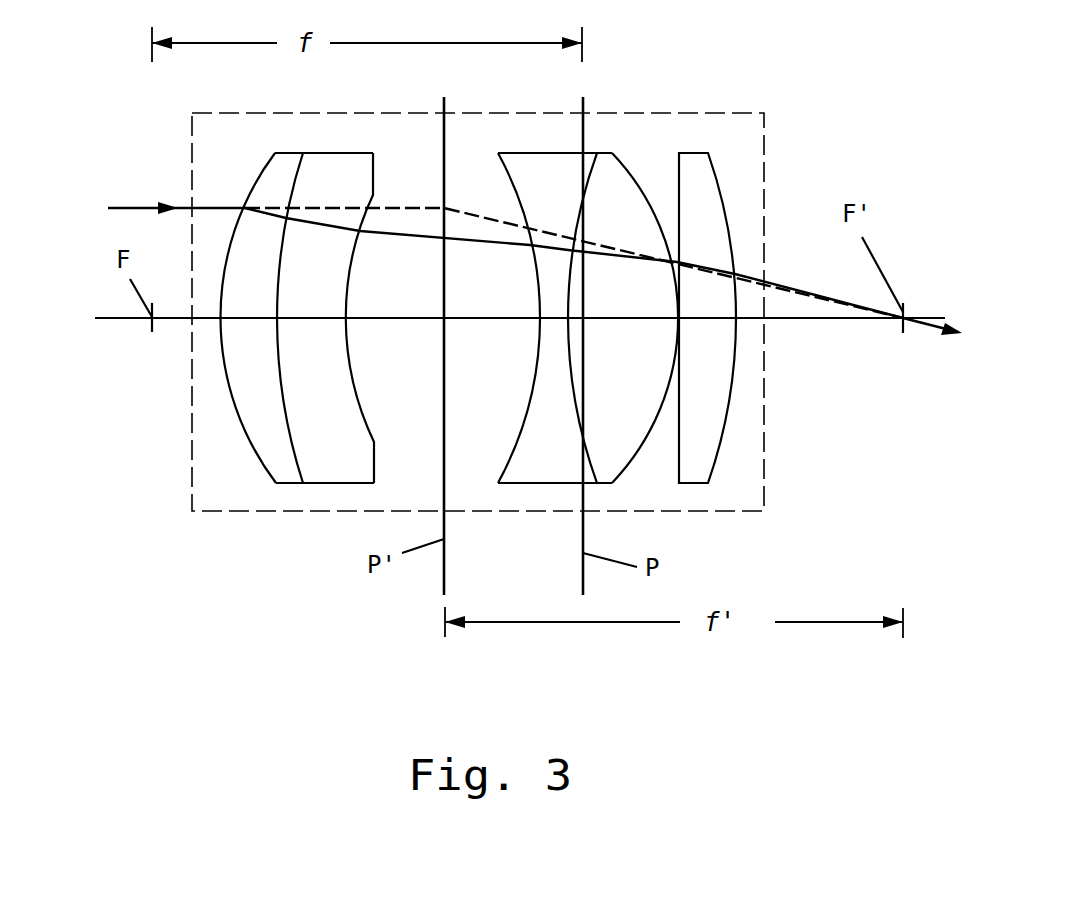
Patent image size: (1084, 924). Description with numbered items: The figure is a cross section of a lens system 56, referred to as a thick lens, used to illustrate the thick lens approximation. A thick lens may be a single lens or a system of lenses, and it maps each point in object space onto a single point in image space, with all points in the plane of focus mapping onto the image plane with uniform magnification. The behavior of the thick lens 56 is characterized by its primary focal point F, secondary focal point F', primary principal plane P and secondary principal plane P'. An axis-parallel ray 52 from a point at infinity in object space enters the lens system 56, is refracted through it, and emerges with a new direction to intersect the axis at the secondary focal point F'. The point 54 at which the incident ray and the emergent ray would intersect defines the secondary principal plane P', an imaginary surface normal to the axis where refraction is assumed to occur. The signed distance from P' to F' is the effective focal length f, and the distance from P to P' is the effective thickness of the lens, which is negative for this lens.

The axis-parallel ray 52 is at (138, 207).
The point 54 is at (443, 207).
The lens system 56 is at (186, 408).